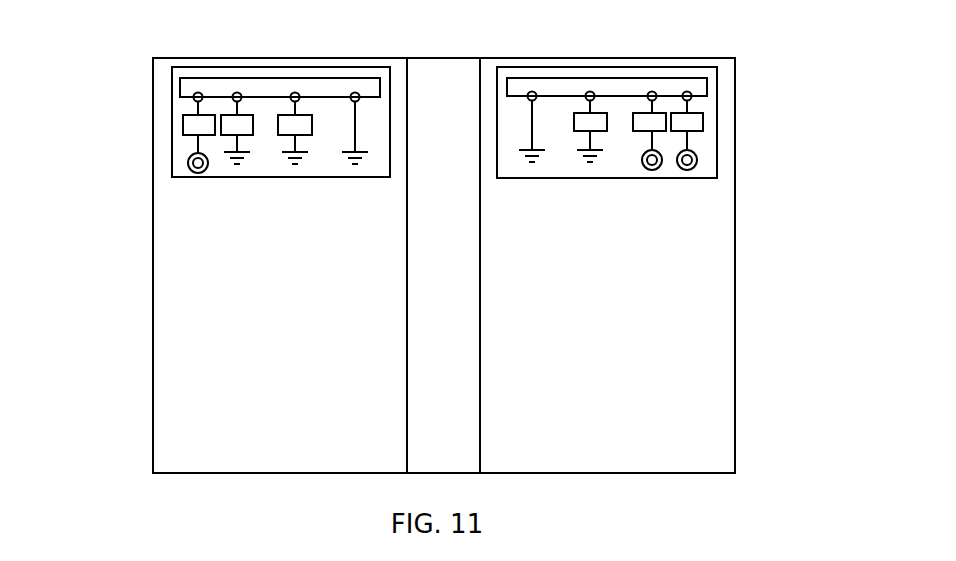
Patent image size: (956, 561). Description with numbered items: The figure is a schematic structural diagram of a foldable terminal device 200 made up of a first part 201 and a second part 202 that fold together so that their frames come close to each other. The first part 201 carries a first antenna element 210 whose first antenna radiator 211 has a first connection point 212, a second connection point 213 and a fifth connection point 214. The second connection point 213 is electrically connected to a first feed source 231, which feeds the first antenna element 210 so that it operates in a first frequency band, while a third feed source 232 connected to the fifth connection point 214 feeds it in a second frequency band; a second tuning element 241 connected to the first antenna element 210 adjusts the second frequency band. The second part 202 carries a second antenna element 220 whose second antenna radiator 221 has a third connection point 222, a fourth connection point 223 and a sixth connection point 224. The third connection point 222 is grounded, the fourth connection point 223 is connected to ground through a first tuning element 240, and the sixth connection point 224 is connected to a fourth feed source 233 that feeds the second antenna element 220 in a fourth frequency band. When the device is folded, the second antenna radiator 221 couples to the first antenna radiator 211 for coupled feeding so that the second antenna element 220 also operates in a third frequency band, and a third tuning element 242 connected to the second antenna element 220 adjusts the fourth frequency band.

The foldable terminal device 200 is at (426, 44).
The first part 201 is at (735, 353).
The second part 202 is at (153, 360).
The first antenna element 210 is at (717, 165).
The first antenna radiator 211 is at (615, 77).
The first connection point 212 is at (532, 92).
The second connection point 213 is at (655, 93).
The fifth connection point 214 is at (690, 93).
The second antenna element 220 is at (171, 176).
The second antenna radiator 221 is at (272, 79).
The third connection point 222 is at (354, 93).
The fourth connection point 223 is at (233, 94).
The sixth connection point 224 is at (194, 94).
The first feed source 231 is at (660, 154).
The third feed source 232 is at (696, 156).
The fourth feed source 233 is at (188, 160).
The first tuning element 240 is at (253, 123).
The second tuning element 241 is at (607, 125).
The third tuning element 242 is at (312, 125).